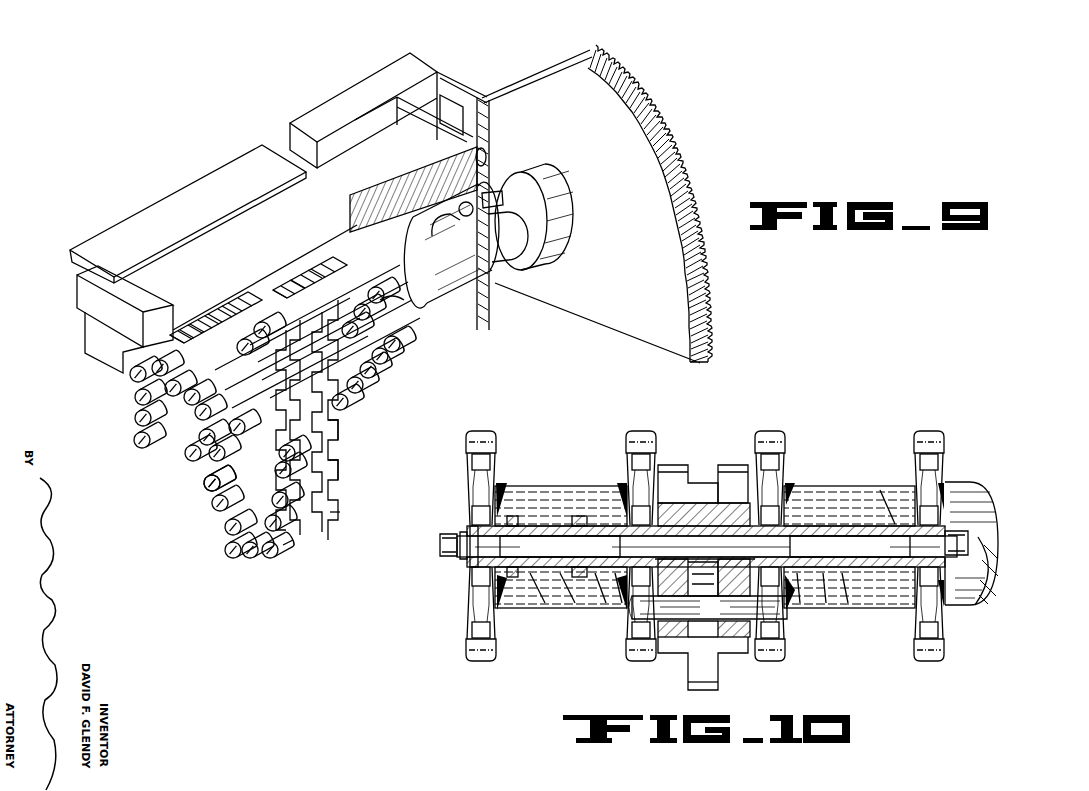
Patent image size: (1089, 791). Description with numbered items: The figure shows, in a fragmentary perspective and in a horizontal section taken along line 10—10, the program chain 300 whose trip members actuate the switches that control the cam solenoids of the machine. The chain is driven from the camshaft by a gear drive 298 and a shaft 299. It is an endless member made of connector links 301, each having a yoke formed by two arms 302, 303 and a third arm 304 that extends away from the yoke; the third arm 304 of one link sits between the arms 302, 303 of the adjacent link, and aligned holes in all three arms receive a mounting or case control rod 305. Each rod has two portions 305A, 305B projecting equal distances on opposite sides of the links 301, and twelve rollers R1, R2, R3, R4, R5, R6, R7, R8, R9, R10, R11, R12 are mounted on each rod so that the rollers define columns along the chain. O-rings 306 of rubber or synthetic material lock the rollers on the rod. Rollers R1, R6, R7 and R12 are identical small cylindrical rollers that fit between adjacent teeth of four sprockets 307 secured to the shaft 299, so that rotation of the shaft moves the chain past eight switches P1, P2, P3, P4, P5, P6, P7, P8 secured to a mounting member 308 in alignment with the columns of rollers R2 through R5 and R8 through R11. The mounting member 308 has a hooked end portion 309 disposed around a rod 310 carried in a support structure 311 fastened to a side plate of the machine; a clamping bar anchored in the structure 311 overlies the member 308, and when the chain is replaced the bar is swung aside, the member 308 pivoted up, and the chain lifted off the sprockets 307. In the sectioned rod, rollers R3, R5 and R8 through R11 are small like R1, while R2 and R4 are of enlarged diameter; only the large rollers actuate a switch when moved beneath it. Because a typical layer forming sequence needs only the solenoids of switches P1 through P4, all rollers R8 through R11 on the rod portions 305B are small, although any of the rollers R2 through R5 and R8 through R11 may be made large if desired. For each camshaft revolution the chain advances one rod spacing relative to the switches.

In FIG. 9, the gear drive 298 is at (653, 232).
In FIG. 9, the shaft 299 is at (495, 275).
In FIG. 10, the shaft 299 is at (977, 483).
In FIG. 9, the program chain 300 is at (262, 561).
In FIG. 10, the program chain 300 is at (647, 636).
In FIG. 9, the connector link 301 is at (340, 430).
In FIG. 10, the connector link 301 is at (688, 670).
In FIG. 9, the arm 302 is at (286, 548).
In FIG. 10, the arm 302 is at (670, 465).
In FIG. 9, the arm 303 is at (340, 466).
In FIG. 10, the arm 303 is at (745, 465).
In FIG. 9, the third arm 304 is at (340, 512).
In FIG. 10, the third arm 304 is at (718, 687).
In FIG. 9, the mounting or case control rod 305 is at (225, 550).
In FIG. 10, the mounting or case control rod 305 is at (460, 560).
In FIG. 10, the rod portion 305A is at (560, 547).
In FIG. 10, the rod portion 305B is at (850, 547).
In FIG. 10, the O-ring 306 is at (465, 532).
In FIG. 9, the sprocket 307 is at (190, 453).
In FIG. 10, the sprocket 307 is at (485, 437).
In FIG. 9, the mounting member 308 is at (86, 352).
In FIG. 9, the hooked end portion 309 is at (463, 120).
In FIG. 9, the rod 310 is at (482, 152).
In FIG. 9, the support structure 311 is at (472, 200).
In FIG. 9, the section line 10 is at (120, 380).
In FIG. 9, the switch P1 is at (178, 336).
In FIG. 9, the switch P2 is at (190, 330).
In FIG. 9, the switch P3 is at (200, 324).
In FIG. 9, the switch P4 is at (215, 316).
In FIG. 9, the switch P5 is at (236, 306).
In FIG. 9, the switch P6 is at (278, 292).
In FIG. 9, the switch P7 is at (296, 282).
In FIG. 9, the switch P8 is at (314, 272).
In FIG. 10, the roller R1 is at (471, 561).
In FIG. 10, the roller R2 is at (515, 516).
In FIG. 10, the roller R3 is at (543, 568).
In FIG. 10, the roller R4 is at (573, 568).
In FIG. 10, the roller R5 is at (607, 568).
In FIG. 9, the roller R6 is at (203, 483).
In FIG. 10, the roller R6 is at (627, 568).
In FIG. 10, the roller R7 is at (797, 573).
In FIG. 9, the roller R8 is at (336, 402).
In FIG. 10, the roller R8 is at (825, 573).
In FIG. 9, the roller R9 is at (358, 386).
In FIG. 10, the roller R9 is at (843, 573).
In FIG. 9, the roller R10 is at (370, 370).
In FIG. 10, the roller R10 is at (857, 522).
In FIG. 9, the roller R11 is at (383, 357).
In FIG. 10, the roller R11 is at (890, 522).
In FIG. 9, the roller R12 is at (395, 345).
In FIG. 10, the roller R12 is at (978, 563).